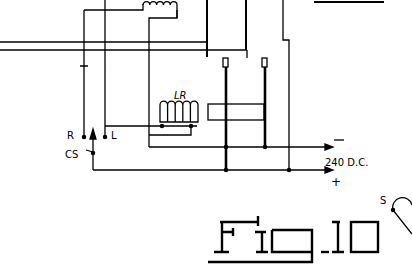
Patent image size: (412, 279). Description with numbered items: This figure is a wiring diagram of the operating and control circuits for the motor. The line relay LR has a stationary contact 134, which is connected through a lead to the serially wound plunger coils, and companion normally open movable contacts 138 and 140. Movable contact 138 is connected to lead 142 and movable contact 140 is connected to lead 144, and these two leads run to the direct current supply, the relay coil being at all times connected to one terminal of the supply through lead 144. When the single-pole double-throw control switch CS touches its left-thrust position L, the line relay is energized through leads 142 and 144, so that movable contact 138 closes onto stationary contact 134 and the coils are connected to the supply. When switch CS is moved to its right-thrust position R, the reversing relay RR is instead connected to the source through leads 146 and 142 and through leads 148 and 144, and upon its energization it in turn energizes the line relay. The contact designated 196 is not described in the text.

The stationary contact 134 is at (214, 58).
The movable contact 138 is at (228, 63).
The movable contact 140 is at (267, 63).
The lead 142 is at (268, 171).
The lead 144 is at (293, 148).
The lead 146 is at (146, 74).
The lead 148 is at (150, 28).
The contact 196 is at (251, 63).